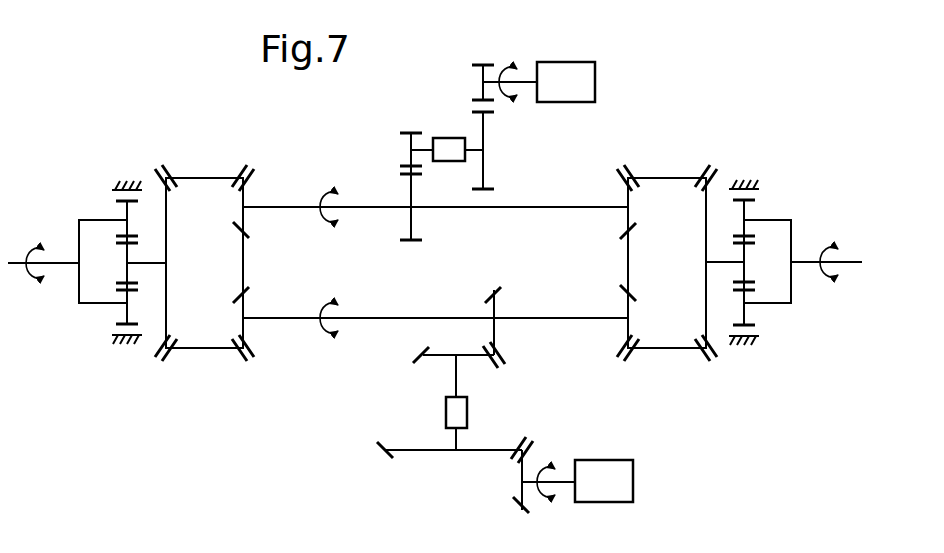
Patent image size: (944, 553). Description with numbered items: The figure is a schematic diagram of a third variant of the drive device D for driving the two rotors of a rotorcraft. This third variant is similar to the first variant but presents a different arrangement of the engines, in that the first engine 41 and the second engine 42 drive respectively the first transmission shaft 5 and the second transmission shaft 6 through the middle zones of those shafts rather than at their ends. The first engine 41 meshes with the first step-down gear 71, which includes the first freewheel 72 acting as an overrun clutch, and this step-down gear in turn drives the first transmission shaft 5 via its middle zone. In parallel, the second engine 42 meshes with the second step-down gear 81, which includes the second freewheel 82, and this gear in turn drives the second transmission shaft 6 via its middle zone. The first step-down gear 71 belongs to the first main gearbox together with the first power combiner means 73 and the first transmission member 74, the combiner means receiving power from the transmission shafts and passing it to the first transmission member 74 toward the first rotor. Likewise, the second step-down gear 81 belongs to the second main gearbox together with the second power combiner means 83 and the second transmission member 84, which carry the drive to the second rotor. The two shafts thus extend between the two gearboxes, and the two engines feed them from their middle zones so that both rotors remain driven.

The first transmission shaft 5 is at (295, 317).
The second transmission shaft 6 is at (300, 206).
The first engine 41 is at (596, 73).
The second engine 42 is at (634, 482).
The first step-down gear 71 is at (484, 172).
The first freewheel 72 is at (445, 138).
The first power combiner means 73 is at (205, 177).
The first transmission member 74 is at (92, 220).
The second step-down gear 81 is at (418, 452).
The second freewheel 82 is at (446, 407).
The second power combiner means 83 is at (673, 177).
The second transmission member 84 is at (780, 220).
The drive device D is at (296, 385).